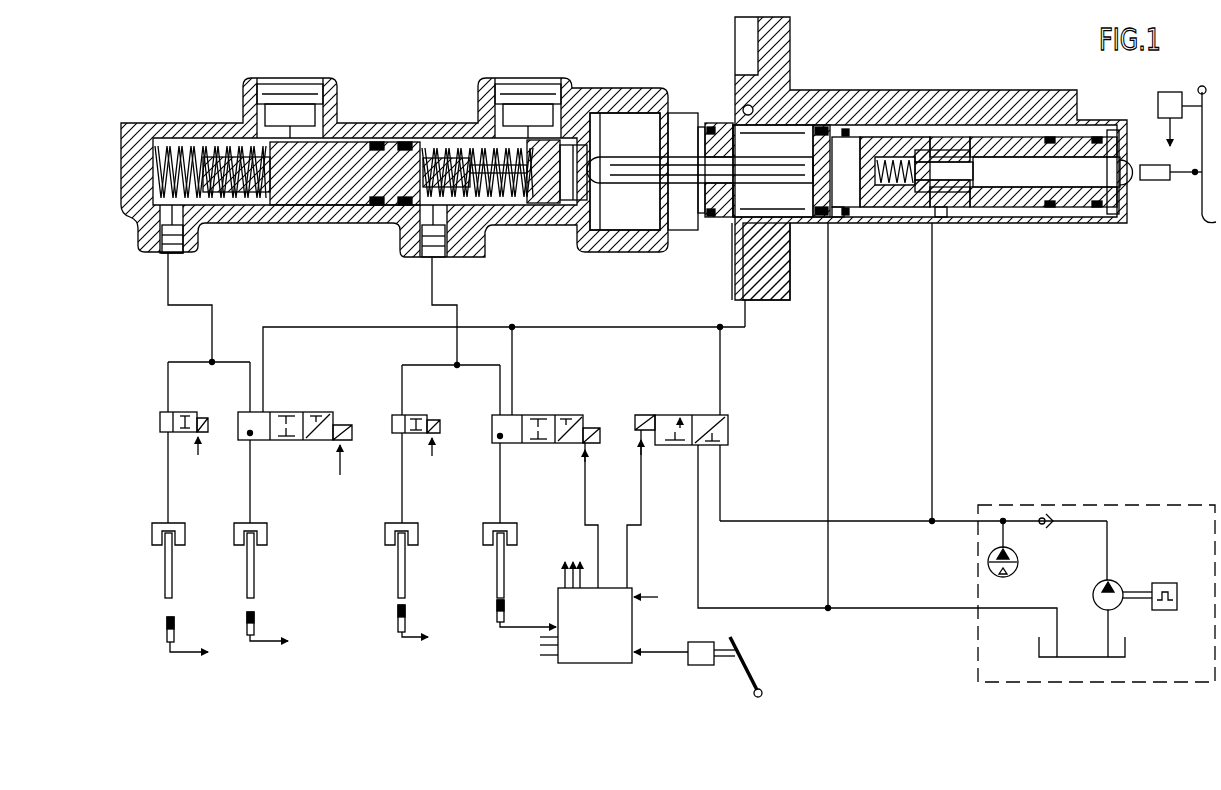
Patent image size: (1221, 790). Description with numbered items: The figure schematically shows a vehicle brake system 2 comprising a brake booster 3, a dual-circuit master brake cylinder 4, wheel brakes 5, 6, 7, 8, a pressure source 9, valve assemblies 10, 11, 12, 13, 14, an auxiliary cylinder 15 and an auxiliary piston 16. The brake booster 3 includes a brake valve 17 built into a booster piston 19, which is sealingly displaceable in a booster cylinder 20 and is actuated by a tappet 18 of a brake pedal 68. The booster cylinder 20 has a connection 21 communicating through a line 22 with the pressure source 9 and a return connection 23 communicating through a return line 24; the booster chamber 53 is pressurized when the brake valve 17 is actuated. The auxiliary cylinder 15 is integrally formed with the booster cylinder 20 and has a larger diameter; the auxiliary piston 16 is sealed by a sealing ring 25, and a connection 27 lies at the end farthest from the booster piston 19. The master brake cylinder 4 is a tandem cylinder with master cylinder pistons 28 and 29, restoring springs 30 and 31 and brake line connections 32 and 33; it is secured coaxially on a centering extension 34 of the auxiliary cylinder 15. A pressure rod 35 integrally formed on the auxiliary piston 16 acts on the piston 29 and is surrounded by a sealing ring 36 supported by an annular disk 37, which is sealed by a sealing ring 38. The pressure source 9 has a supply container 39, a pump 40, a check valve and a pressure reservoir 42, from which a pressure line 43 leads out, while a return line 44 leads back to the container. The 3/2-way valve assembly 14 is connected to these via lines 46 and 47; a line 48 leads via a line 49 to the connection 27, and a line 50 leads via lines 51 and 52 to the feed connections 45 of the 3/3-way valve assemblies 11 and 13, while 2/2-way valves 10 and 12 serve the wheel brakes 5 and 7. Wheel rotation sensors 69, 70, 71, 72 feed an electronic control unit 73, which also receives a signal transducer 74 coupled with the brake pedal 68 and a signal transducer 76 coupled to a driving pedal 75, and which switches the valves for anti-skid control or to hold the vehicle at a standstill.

The vehicle brake system 2 is at (1067, 322).
The brake booster 3 is at (1052, 88).
The dual-circuit master brake cylinder 4 is at (405, 110).
The wheel brake 5 is at (186, 530).
The wheel brake 6 is at (268, 530).
The wheel brake 7 is at (419, 530).
The wheel brake 8 is at (518, 530).
The pressure source 9 is at (1076, 504).
The valve assembly 10 is at (190, 412).
The valve assembly 11 is at (330, 420).
The valve assembly 12 is at (427, 420).
The valve assembly 13 is at (570, 420).
The valve assembly 14 is at (730, 420).
The auxiliary cylinder 15 is at (795, 126).
The auxiliary piston 16 is at (880, 136).
The brake valve 17 is at (963, 133).
The tappet 18 is at (1157, 184).
The booster piston 19 is at (1030, 138).
The booster cylinder 20 is at (1100, 216).
The connection 21 is at (945, 216).
The line 22 is at (935, 378).
The return connection 23 is at (838, 220).
The return line 24 is at (831, 378).
The sealing ring 25 is at (823, 126).
The connection 27 is at (790, 256).
The master cylinder piston 28 is at (343, 150).
The master cylinder piston 29 is at (578, 125).
The restoring spring 30 is at (205, 140).
The restoring spring 31 is at (470, 150).
The brake line connection 32 is at (188, 247).
The brake line connection 33 is at (448, 250).
The centering extension 34 is at (614, 95).
The pressure rod 35 is at (765, 158).
The sealing ring 36 is at (700, 118).
The annular disk 37 is at (722, 124).
The sealing ring 38 is at (712, 222).
The supply container 39 is at (1036, 640).
The pump 40 is at (1122, 588).
The pressure reservoir 42 is at (1020, 560).
The pressure line 43 is at (962, 519).
The return line 44 is at (935, 607).
The feed connection 45 is at (270, 412).
The line 46 is at (884, 519).
The line 47 is at (790, 612).
The line 48 is at (720, 392).
The line 49 is at (748, 327).
The line 50 is at (635, 328).
The line 51 is at (378, 328).
The line 52 is at (515, 345).
The booster chamber 53 is at (1062, 210).
The brake pedal 68 is at (1210, 218).
The wheel rotation sensor 69 is at (176, 625).
The wheel rotation sensor 70 is at (256, 620).
The wheel rotation sensor 71 is at (397, 615).
The wheel rotation sensor 72 is at (496, 609).
The electronic control unit 73 is at (597, 662).
The signal transducer 74 is at (1158, 102).
The driving pedal 75 is at (745, 658).
The signal transducer 76 is at (702, 666).